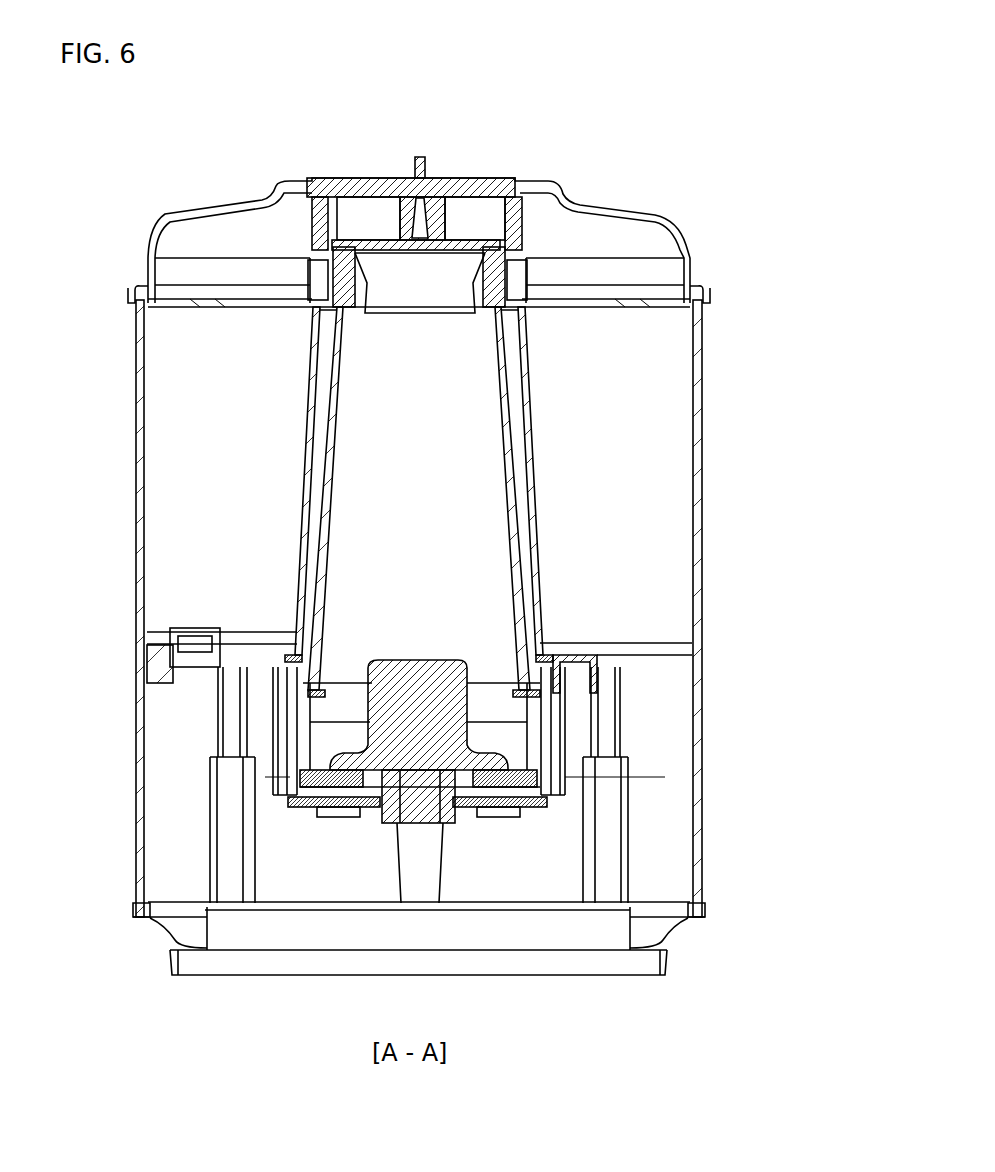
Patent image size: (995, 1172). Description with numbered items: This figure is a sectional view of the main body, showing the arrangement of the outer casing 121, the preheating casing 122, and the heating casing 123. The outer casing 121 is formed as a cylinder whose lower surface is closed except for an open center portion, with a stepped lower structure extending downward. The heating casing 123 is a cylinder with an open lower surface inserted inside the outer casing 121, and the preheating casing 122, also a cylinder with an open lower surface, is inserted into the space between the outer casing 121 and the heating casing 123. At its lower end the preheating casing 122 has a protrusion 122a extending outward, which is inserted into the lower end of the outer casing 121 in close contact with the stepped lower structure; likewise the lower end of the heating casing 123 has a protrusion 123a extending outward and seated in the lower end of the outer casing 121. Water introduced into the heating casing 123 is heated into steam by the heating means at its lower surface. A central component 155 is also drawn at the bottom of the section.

The outer casing 121 is at (703, 345).
The preheating casing 122 is at (535, 452).
The heating casing 123 is at (520, 570).
The protrusion 122a is at (553, 653).
The protrusion 123a is at (540, 690).
The rotor hub 155 is at (430, 735).